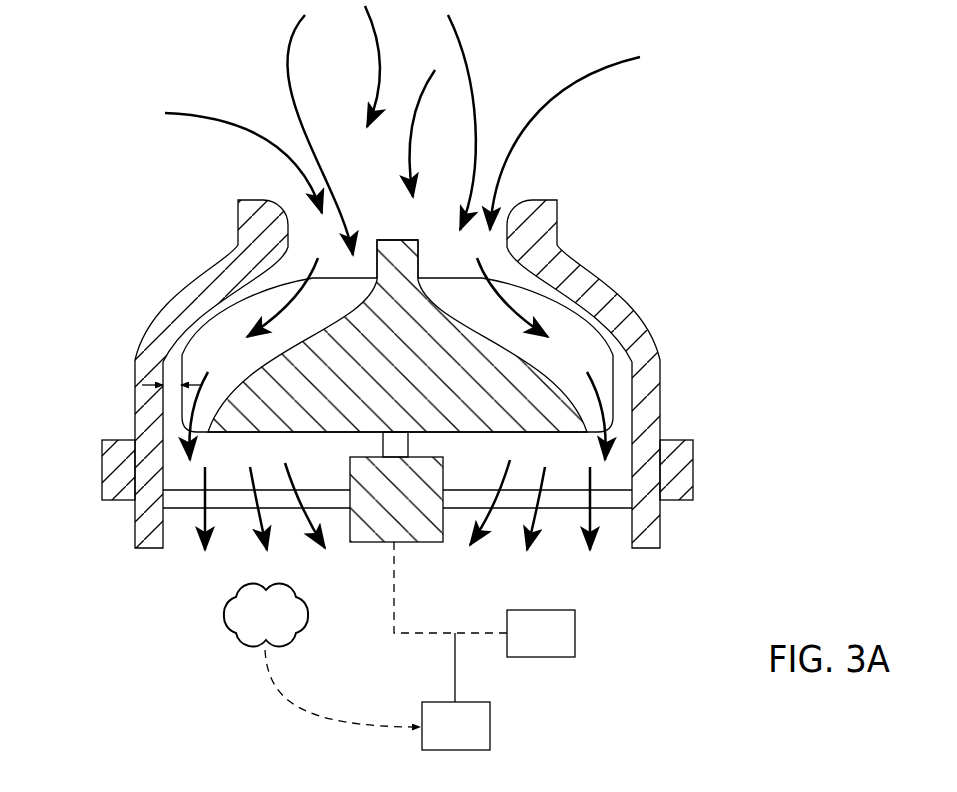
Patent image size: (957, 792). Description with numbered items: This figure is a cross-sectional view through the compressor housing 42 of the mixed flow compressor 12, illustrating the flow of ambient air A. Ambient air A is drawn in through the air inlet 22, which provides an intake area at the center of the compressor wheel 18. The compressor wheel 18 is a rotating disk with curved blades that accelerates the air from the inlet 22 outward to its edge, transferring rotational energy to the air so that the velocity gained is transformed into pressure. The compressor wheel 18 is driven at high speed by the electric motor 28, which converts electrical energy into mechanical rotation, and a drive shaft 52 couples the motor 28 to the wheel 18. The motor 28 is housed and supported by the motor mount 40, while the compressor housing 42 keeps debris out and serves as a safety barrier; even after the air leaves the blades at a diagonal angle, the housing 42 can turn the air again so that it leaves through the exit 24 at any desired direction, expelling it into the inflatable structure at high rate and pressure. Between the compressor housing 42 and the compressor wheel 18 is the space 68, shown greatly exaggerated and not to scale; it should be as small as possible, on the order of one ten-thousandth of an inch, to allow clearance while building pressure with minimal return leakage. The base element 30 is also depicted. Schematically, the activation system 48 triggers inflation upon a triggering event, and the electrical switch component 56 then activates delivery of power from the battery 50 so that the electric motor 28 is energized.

The ambient air A is at (419, 30).
The mixed flow compressor 12 is at (585, 190).
The compressor wheel 18 is at (410, 368).
The air inlet 22 is at (297, 220).
The exit 24 is at (233, 520).
The electric motor 28 is at (408, 505).
The base plate 30 is at (200, 488).
The motor mount 40 is at (617, 500).
The compressor housing 42 is at (622, 300).
The activation system 48 is at (322, 655).
The battery 50 is at (556, 647).
The drive shaft 52 is at (400, 450).
The electrical switch component 56 is at (470, 739).
The space 68 is at (172, 385).